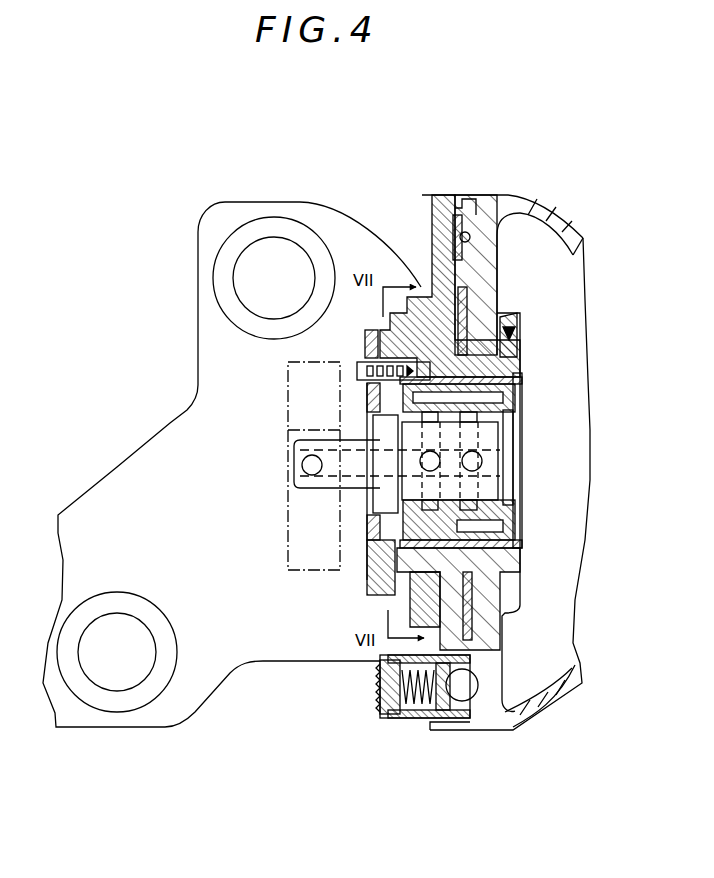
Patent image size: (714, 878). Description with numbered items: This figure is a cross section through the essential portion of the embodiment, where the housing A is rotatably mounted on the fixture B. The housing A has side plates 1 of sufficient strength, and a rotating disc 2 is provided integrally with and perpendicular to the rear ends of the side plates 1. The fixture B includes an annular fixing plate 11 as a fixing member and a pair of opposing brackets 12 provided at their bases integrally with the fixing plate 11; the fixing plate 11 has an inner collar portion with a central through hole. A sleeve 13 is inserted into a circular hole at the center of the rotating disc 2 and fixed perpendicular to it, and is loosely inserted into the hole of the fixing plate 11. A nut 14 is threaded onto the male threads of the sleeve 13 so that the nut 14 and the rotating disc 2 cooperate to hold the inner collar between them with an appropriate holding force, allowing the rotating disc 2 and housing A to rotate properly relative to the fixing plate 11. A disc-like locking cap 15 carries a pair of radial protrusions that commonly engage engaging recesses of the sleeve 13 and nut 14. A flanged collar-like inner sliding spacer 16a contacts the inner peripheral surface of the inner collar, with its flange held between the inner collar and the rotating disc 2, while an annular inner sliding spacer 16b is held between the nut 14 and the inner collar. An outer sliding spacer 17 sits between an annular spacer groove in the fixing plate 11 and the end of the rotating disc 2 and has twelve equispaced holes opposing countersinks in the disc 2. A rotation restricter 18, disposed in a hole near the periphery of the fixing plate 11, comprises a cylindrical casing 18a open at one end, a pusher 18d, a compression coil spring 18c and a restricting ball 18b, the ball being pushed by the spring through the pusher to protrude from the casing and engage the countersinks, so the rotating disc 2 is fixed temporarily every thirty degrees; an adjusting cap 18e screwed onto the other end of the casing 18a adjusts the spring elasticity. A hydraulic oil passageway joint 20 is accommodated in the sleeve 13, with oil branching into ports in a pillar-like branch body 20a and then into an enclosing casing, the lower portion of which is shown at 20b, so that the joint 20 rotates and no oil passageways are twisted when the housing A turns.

The side plates 1 is at (575, 645).
The rotating disc 2 is at (504, 242).
The annular fixing plate 11 is at (436, 212).
The brackets 12 is at (115, 468).
The sleeve 13 is at (505, 328).
The nut 14 is at (423, 286).
The locking cap 15 is at (361, 334).
The flanged inner sliding spacer 16a is at (472, 322).
The annular inner sliding spacer 16b is at (468, 600).
The outer sliding spacer 17 is at (469, 220).
The rotation restricter 18 is at (414, 715).
The cylindrical casing 18a is at (388, 722).
The restricting ball 18b is at (468, 690).
The compression coil spring 18c is at (418, 708).
The pusher 18d is at (450, 732).
The adjusting cap 18e is at (375, 697).
The hydraulic oil passageway joint 20 is at (312, 493).
The branch body 20a is at (490, 438).
The flange plate 20b is at (395, 548).
The housing A is at (578, 229).
The fixture B is at (216, 203).